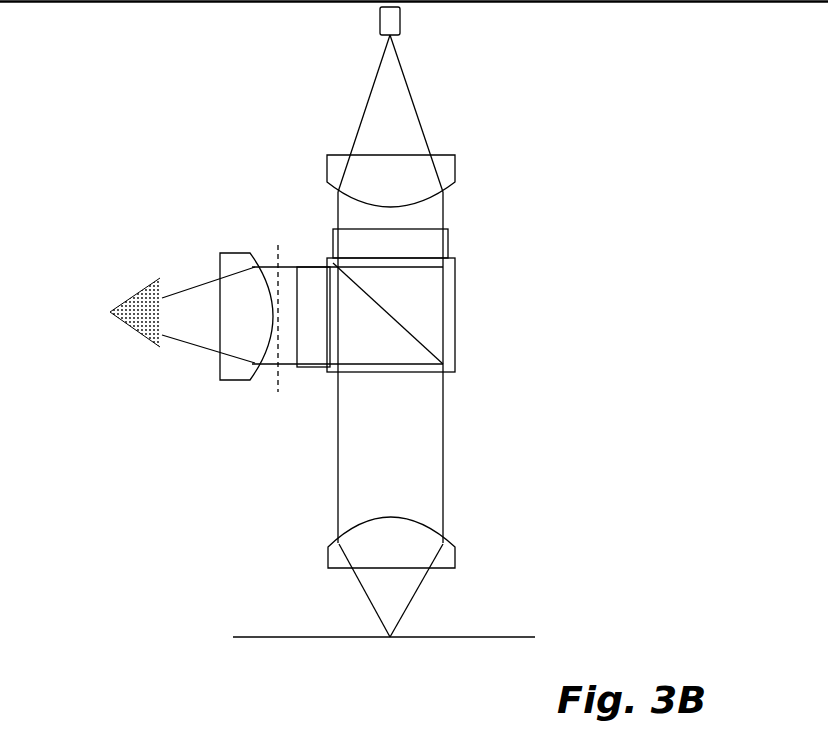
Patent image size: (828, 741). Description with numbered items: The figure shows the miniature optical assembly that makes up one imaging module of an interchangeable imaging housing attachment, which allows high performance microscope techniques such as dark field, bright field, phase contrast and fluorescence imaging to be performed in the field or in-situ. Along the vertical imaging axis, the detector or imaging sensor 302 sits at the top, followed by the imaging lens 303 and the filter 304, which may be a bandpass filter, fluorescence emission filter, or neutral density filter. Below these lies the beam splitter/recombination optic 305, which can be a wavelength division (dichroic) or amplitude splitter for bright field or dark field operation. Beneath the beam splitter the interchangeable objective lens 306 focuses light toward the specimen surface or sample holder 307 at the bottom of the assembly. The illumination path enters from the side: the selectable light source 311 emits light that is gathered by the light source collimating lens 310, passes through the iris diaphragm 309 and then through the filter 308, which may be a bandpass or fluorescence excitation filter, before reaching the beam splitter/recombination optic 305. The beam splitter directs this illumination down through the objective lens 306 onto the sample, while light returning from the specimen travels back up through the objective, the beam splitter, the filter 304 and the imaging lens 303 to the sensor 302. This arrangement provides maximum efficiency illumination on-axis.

The detector or imaging sensor 302 is at (400, 19).
The imaging lens 303 is at (410, 175).
The filter 304 is at (430, 240).
The beam splitter/recombination optic 305 is at (413, 315).
The interchangeable objective lens 306 is at (419, 542).
The specimen surface or sample holder 307 is at (384, 619).
The filter 308 is at (311, 370).
The iris diaphragm 309 is at (277, 296).
The light source collimating lens 310 is at (246, 340).
The selectable light source 311 is at (165, 315).